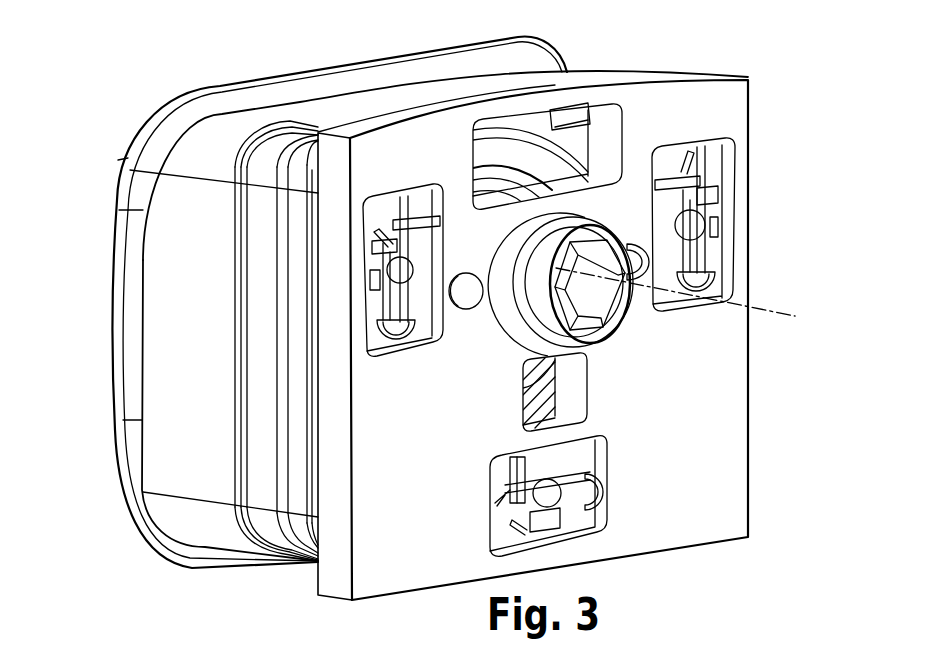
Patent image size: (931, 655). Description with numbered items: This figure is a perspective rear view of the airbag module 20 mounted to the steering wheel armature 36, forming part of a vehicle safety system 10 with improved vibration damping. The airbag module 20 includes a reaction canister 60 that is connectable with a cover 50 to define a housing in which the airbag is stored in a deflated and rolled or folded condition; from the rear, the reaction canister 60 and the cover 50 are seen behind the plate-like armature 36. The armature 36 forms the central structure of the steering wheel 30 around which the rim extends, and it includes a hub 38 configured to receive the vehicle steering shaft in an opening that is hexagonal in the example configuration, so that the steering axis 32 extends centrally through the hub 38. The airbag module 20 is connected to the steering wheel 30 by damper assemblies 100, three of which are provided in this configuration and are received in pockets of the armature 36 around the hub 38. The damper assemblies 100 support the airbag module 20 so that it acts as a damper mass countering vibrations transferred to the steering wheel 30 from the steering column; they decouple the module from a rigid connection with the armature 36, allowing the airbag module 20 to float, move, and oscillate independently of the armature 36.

The vehicle safety system 10 is at (113, 53).
The airbag module 20 is at (100, 133).
The steering wheel 30 is at (706, 98).
The steering wheel armature 36 is at (549, 267).
The hub 38 is at (590, 300).
The steering axis 32 is at (773, 310).
The cover 50 is at (155, 310).
The reaction canister 60 is at (267, 348).
The damper assemblies 100 is at (793, 188).